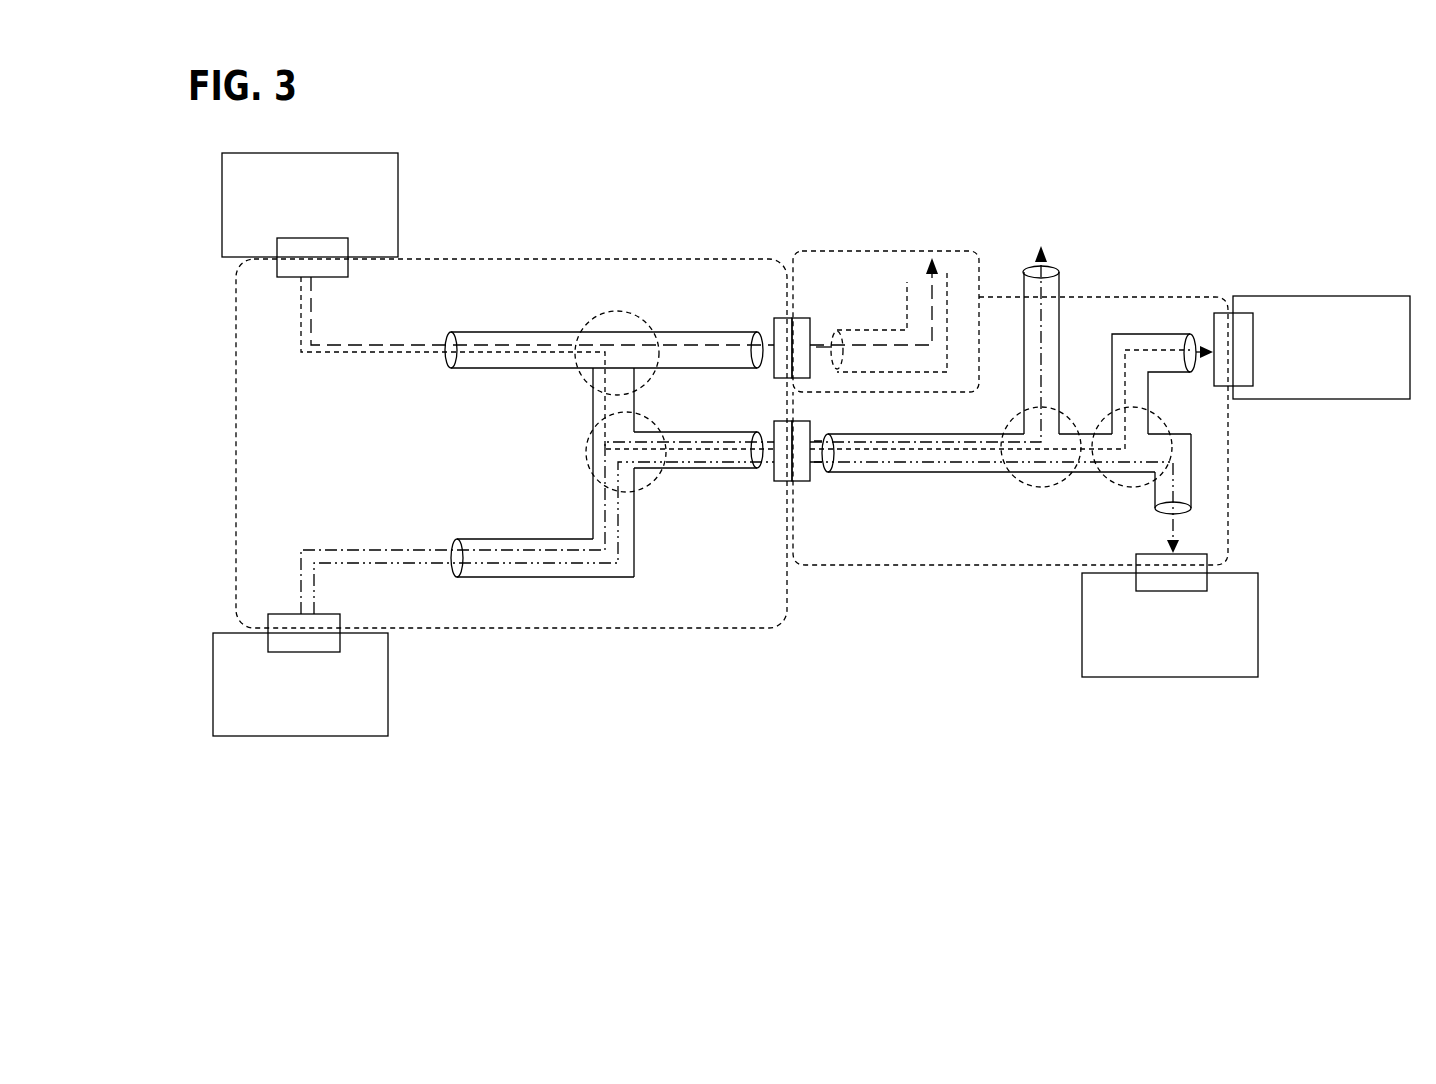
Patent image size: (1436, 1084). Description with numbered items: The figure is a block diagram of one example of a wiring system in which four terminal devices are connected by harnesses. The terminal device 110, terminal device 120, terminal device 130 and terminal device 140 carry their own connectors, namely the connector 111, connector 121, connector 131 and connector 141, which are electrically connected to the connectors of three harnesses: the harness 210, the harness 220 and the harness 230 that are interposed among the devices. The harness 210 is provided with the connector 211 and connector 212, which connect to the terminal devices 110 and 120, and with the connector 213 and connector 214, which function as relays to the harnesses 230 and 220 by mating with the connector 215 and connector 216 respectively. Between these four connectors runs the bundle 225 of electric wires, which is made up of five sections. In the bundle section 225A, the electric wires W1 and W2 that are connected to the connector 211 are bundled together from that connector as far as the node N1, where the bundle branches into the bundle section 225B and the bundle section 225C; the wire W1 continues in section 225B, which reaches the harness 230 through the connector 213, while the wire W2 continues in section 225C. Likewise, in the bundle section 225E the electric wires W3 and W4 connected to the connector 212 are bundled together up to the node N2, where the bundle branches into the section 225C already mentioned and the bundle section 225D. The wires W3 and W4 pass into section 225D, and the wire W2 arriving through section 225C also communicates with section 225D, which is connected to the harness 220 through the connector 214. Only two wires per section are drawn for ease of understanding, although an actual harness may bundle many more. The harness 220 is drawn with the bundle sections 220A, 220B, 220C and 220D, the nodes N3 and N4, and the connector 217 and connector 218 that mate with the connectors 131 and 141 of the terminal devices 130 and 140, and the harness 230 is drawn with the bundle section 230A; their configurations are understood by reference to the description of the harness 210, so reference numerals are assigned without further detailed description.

The terminal device 110 is at (398, 194).
The connector 111 is at (277, 251).
The connector 211 is at (245, 262).
The terminal device 120 is at (388, 690).
The connector 121 is at (268, 638).
The connector 212 is at (236, 633).
The terminal device 130 is at (1347, 399).
The connector 131 is at (1243, 313).
The connector 217 is at (1241, 290).
The terminal device 140 is at (1120, 677).
The connector 141 is at (1207, 582).
The connector 218 is at (1234, 568).
The harness 210 is at (550, 640).
The harness 220 is at (1058, 415).
The harness 230 is at (886, 285).
The bundle section 230A is at (850, 330).
The connector 213 is at (778, 317).
The connector 214 is at (777, 482).
The connector 215 is at (803, 317).
The connector 216 is at (804, 482).
The bundle 225 is at (606, 389).
The bundle section 225A is at (478, 332).
The bundle section 225B is at (688, 333).
The bundle section 225C is at (634, 398).
The bundle section 225D is at (712, 433).
The bundle section 225E is at (645, 548).
The bundle section 220A is at (910, 473).
The bundle section 220B is at (1059, 284).
The bundle section 220C is at (1143, 334).
The bundle section 220D is at (1191, 464).
The node N1 is at (582, 373).
The node N2 is at (587, 449).
The node N3 is at (1024, 486).
The node N4 is at (1103, 483).
The electric wire W1 is at (392, 343).
The electric wire W2 is at (352, 352).
The electric wire W3 is at (387, 550).
The electric wire W4 is at (340, 563).